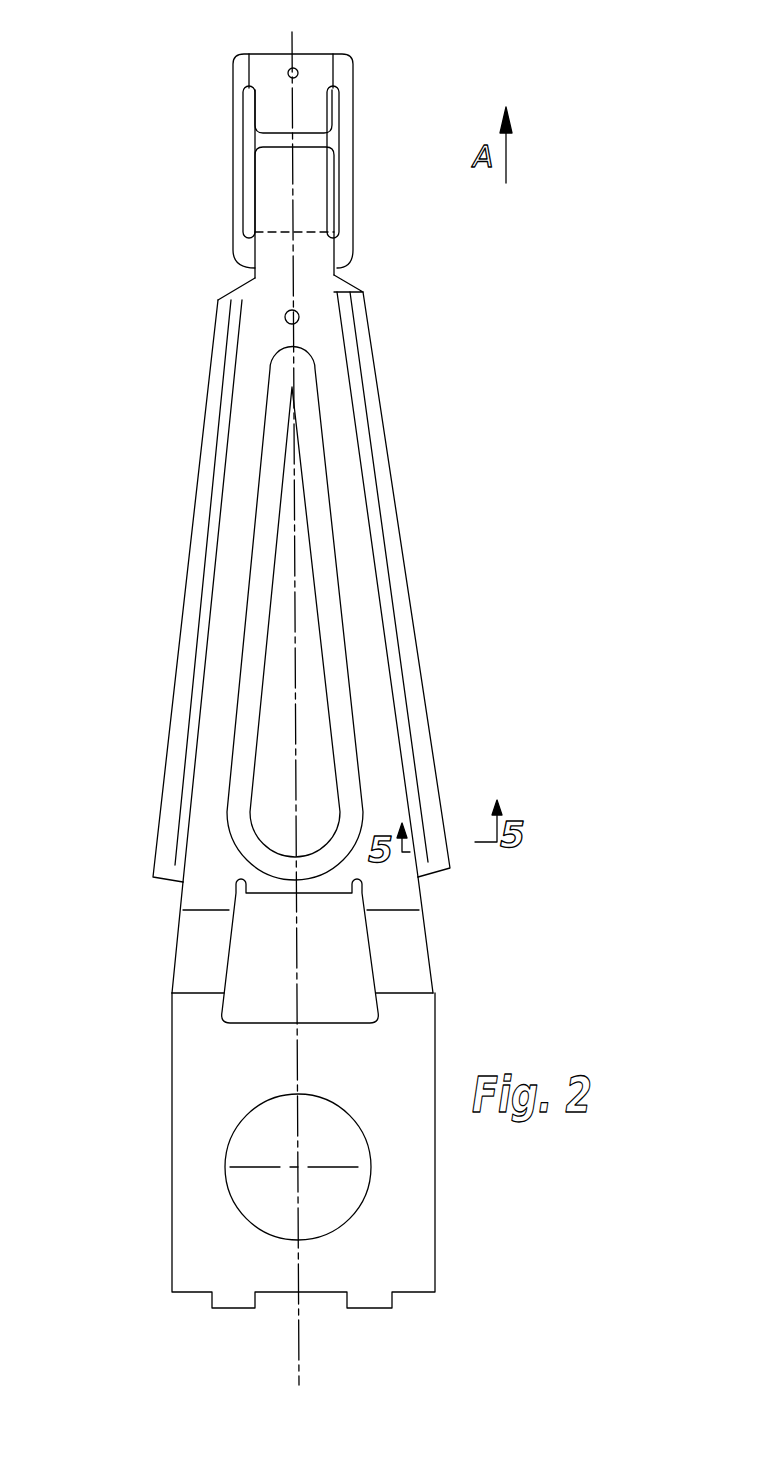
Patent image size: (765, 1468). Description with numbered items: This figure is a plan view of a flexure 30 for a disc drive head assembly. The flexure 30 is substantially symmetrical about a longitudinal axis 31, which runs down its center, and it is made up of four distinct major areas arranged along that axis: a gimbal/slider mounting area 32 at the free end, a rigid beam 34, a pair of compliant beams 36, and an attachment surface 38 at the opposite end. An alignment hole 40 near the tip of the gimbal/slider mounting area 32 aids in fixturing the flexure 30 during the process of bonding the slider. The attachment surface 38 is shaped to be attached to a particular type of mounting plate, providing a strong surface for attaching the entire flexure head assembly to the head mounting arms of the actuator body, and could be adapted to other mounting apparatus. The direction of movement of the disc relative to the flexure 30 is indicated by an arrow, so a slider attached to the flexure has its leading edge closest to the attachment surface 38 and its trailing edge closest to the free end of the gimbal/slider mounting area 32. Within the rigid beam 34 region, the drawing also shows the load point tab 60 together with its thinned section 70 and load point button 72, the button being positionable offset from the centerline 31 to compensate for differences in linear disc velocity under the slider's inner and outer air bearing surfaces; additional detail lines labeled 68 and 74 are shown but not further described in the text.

The flexure 30 is at (264, 696).
The longitudinal axis 31 is at (318, 1316).
The gimbal/slider mounting area 32 is at (205, 143).
The rigid beam 34 is at (264, 540).
The compliant beams 36 is at (95, 882).
The attachment surface 38 is at (95, 1032).
The alignment hole 40 is at (298, 70).
The load point tab 60 is at (220, 398).
The elongated slot 68 is at (307, 692).
The thinned section 70 is at (342, 748).
The load point button 72 is at (240, 290).
The side wall of spring arm 74 is at (245, 350).